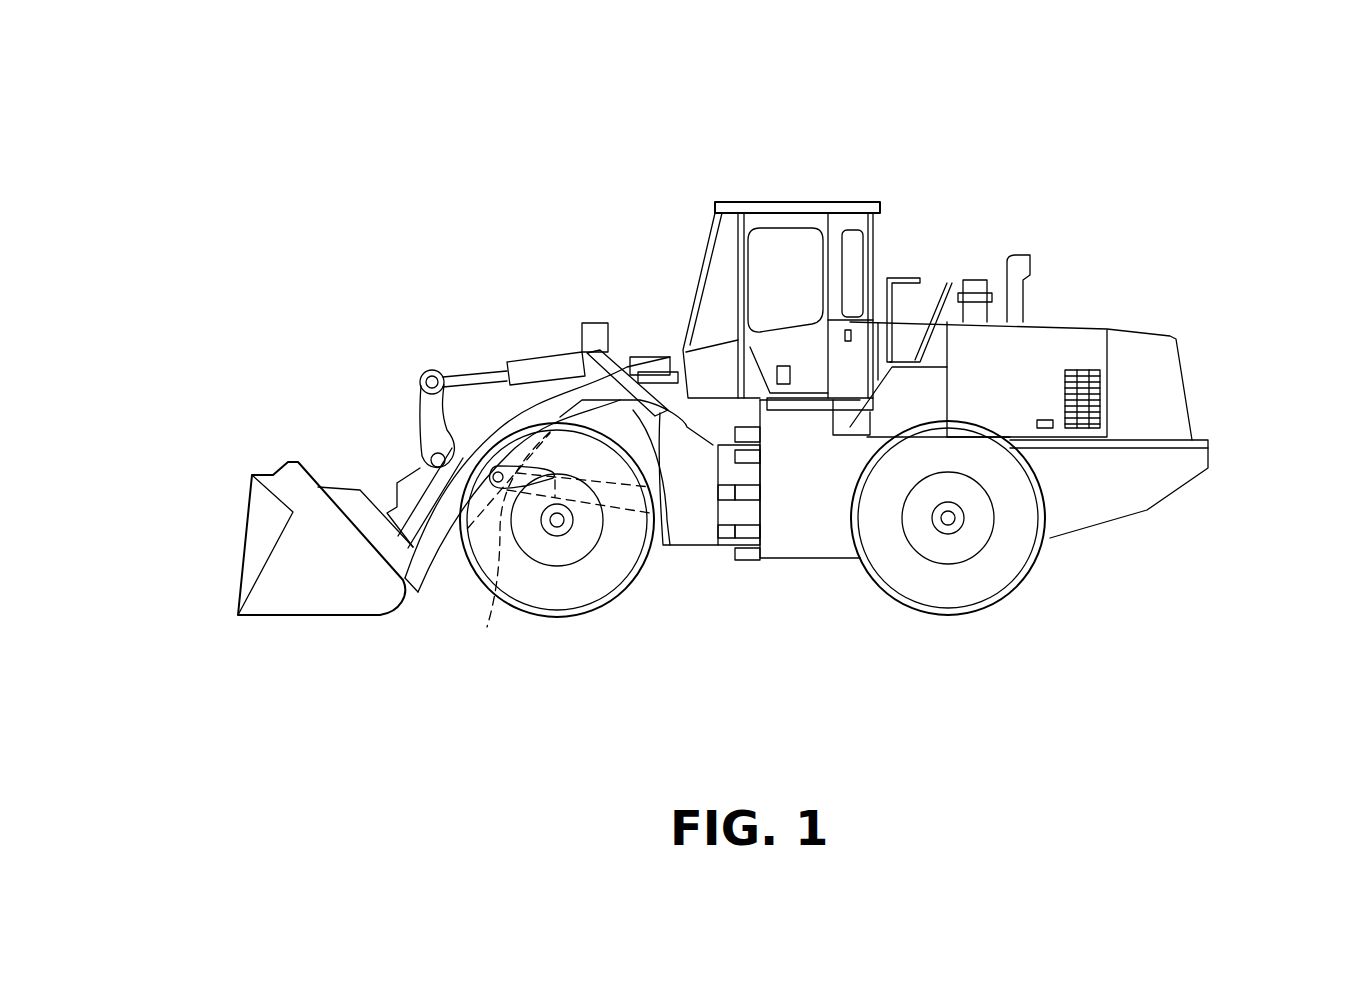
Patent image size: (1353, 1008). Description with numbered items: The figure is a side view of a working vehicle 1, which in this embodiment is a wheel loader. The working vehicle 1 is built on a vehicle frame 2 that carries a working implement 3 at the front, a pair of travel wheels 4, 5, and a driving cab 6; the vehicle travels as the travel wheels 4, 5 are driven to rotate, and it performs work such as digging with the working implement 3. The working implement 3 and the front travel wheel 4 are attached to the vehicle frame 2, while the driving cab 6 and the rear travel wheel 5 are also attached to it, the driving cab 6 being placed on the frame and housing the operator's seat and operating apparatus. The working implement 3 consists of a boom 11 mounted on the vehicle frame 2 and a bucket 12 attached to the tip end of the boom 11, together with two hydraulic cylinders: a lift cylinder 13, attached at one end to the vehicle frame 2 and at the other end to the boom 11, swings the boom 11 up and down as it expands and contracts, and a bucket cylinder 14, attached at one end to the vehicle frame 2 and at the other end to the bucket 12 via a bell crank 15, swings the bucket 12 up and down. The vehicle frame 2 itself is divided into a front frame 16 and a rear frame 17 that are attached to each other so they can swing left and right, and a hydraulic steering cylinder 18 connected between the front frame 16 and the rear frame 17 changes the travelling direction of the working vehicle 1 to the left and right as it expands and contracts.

The working vehicle 1 is at (1007, 118).
The vehicle frame 2 is at (779, 572).
The working implement 3 is at (305, 437).
The travel wheel 4 is at (570, 600).
The travel wheel 5 is at (958, 598).
The driving cab 6 is at (842, 203).
The boom 11 is at (470, 460).
The bucket 12 is at (288, 549).
The lift cylinder 13 is at (554, 549).
The bucket cylinder 14 is at (515, 353).
The bell crank 15 is at (423, 432).
The front frame 16 is at (675, 535).
The rear frame 17 is at (1085, 537).
The steering cylinder 18 is at (742, 495).